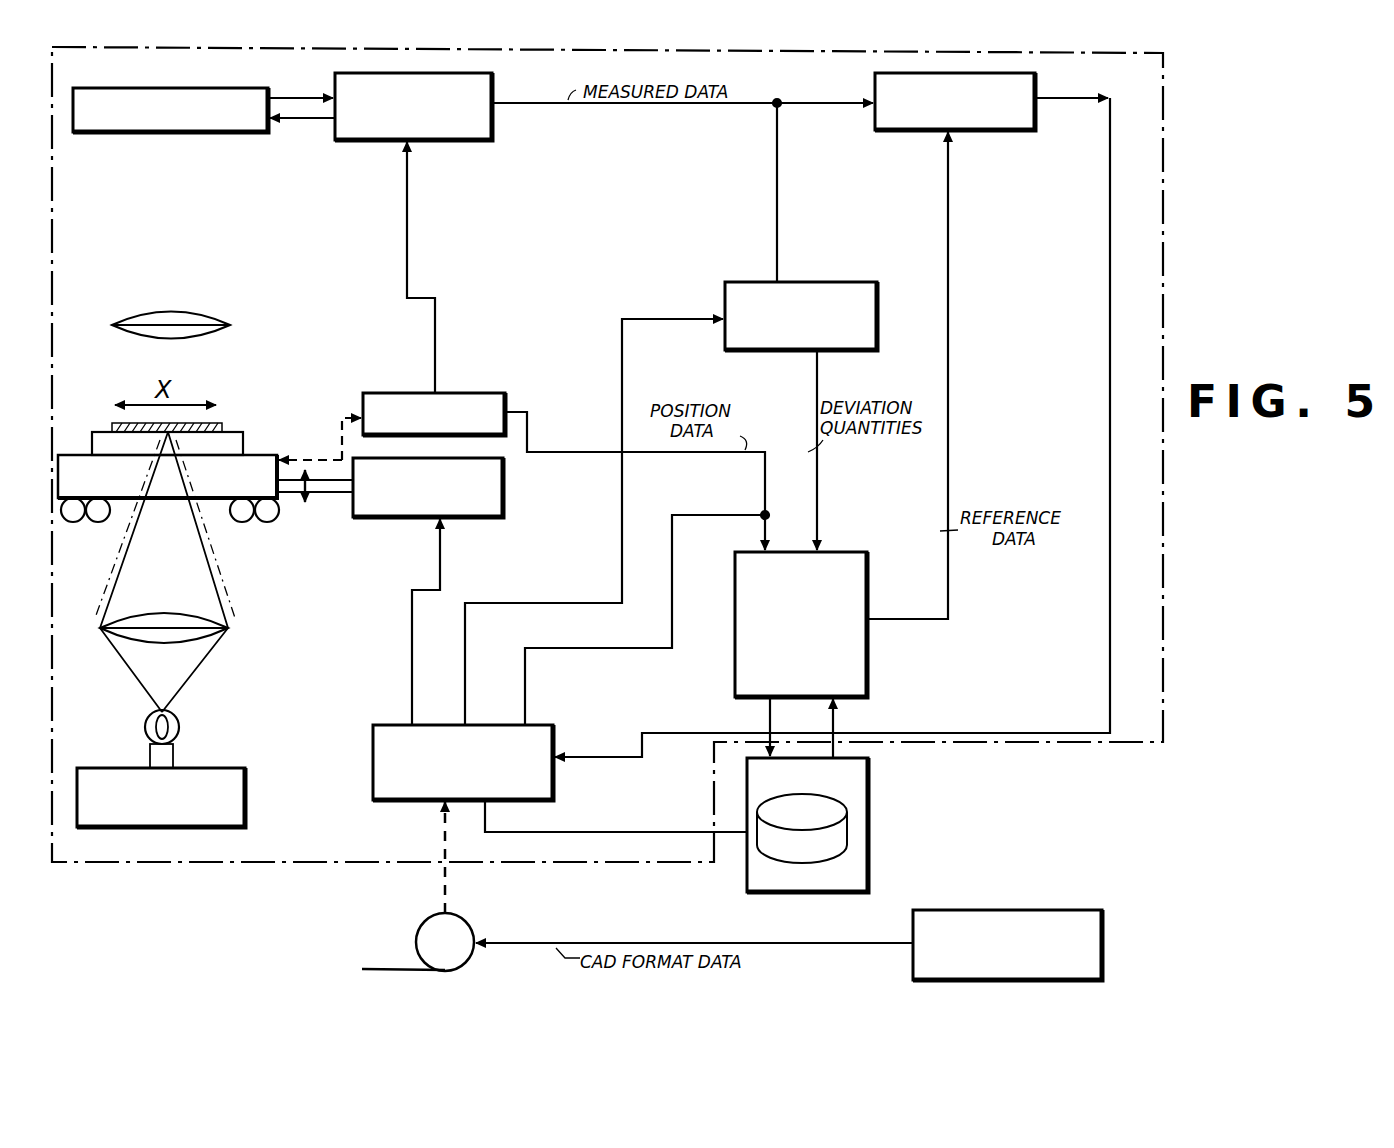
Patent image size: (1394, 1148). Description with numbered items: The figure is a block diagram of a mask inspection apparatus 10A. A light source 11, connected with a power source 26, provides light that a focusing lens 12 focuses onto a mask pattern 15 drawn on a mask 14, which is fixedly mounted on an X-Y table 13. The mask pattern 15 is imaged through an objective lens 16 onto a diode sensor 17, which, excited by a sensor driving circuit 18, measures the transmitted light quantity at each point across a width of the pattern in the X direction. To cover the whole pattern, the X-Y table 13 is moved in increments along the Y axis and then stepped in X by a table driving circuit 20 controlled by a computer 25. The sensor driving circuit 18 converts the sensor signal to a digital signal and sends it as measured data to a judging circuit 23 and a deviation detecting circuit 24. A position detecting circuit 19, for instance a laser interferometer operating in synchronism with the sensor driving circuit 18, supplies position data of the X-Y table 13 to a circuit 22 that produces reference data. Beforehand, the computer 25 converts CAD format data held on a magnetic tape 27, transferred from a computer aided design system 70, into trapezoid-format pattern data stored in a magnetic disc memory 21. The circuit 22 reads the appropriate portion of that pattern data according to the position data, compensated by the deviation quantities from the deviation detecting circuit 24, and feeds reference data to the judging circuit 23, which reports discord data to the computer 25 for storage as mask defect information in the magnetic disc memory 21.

The mask inspection apparatus 10A is at (1166, 310).
The light source 11 is at (180, 727).
The focusing lens 12 is at (228, 630).
The X-Y table 13 is at (128, 500).
The mask 14 is at (243, 450).
The mask pattern 15 is at (222, 425).
The objective lens 16 is at (222, 314).
The diode sensor 17 is at (212, 66).
The sensor driving circuit 18 is at (492, 80).
The position detecting circuit 19 is at (398, 392).
The table driving circuit 20 is at (402, 522).
The magnetic disc memory 21 is at (862, 856).
The circuit for producing reference data 22 is at (735, 677).
The judging circuit 23 is at (1035, 82).
The deviation detecting circuit 24 is at (866, 284).
The computer 25 is at (373, 792).
The power source 26 is at (245, 768).
The magnetic tape 27 is at (432, 922).
The computer aided design system 70 is at (1055, 908).